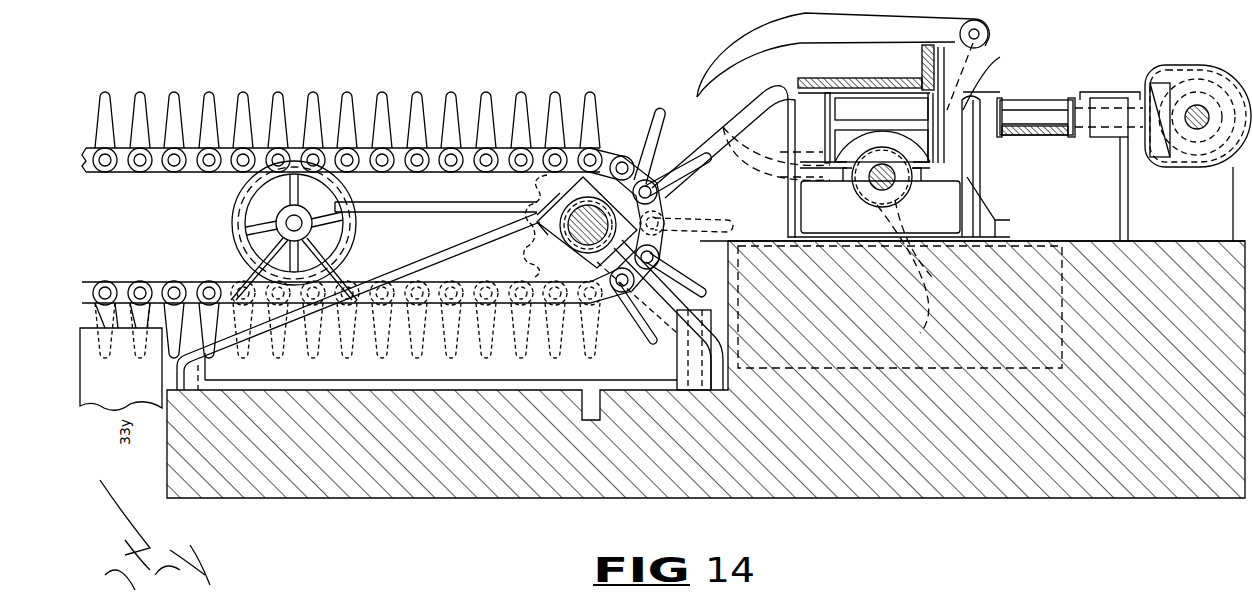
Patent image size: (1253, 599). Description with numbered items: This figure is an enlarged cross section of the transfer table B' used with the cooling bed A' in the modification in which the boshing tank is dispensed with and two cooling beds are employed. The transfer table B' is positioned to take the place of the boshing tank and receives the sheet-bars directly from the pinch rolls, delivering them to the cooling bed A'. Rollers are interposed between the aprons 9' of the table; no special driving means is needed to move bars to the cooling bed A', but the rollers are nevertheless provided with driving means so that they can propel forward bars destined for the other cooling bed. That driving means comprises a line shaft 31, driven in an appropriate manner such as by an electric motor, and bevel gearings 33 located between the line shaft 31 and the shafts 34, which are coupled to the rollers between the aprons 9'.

The cooling bed A' is at (342, 119).
The aprons 9' is at (972, 189).
The line shaft 31 is at (1198, 105).
The bevel gearings 33 is at (1168, 88).
The shafts 34 is at (1038, 106).
The transfer table B' is at (986, 164).